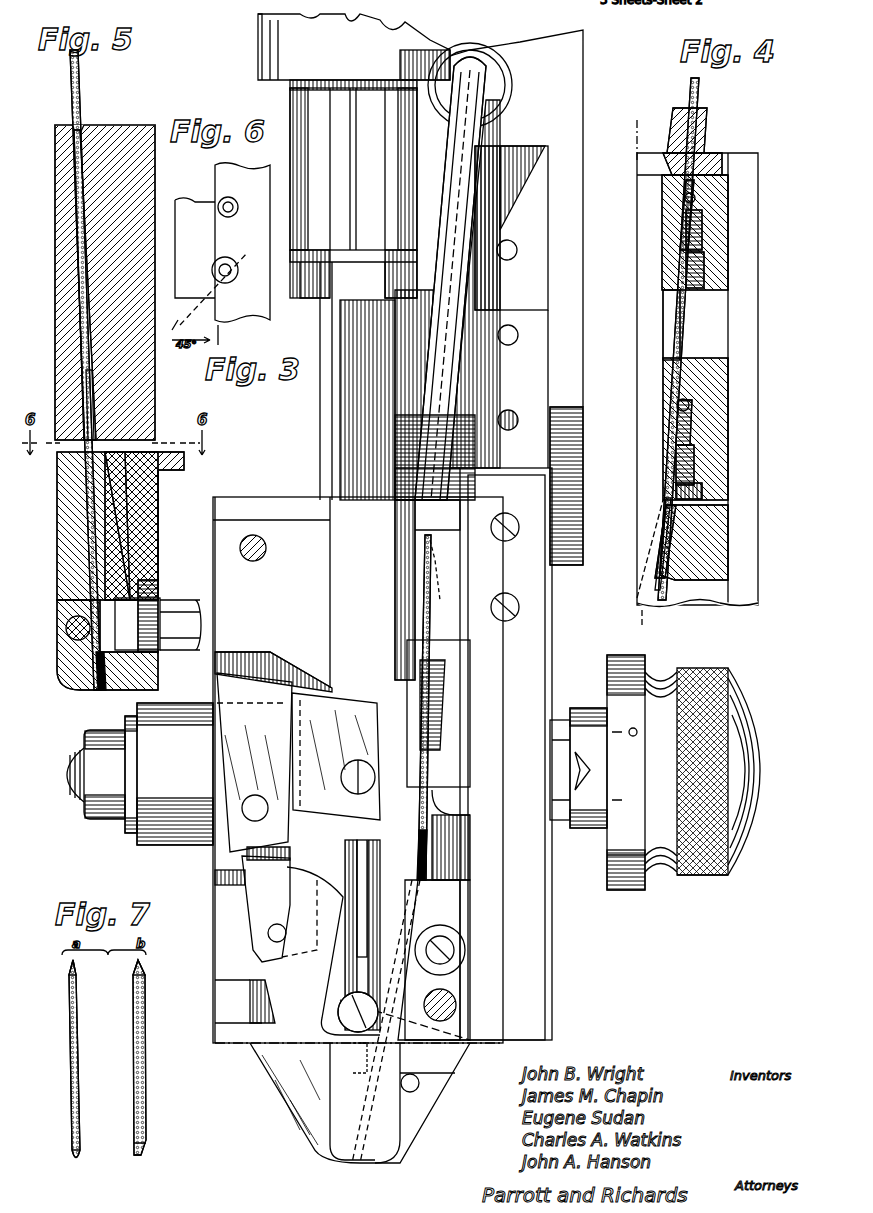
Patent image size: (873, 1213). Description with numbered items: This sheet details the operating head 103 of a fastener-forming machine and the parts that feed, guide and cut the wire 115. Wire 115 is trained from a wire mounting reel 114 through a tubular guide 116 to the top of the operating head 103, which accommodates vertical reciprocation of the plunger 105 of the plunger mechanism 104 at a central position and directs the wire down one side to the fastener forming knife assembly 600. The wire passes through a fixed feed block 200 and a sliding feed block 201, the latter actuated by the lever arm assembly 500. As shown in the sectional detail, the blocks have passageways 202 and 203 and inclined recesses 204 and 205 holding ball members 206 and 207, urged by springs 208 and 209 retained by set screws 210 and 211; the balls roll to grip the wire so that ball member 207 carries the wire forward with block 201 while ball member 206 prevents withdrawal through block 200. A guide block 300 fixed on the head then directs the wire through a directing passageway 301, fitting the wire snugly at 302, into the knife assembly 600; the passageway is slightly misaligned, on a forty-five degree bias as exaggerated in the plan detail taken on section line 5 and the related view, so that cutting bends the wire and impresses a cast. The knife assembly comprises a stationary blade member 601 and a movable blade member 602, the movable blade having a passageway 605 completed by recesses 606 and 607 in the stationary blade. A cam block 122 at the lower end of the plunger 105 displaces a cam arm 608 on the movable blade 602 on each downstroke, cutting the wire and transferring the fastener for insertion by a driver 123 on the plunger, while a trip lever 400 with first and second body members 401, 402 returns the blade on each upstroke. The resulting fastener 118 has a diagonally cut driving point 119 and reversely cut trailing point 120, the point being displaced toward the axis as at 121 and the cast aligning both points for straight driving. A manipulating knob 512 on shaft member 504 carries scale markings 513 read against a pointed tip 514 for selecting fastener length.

In FIG. 3, the section line 5— 5 is at (425, 858).
In FIG. 4, the operating head 103 is at (758, 567).
In FIG. 3, the operating head 103 is at (505, 982).
In FIG. 3, the plunger mechanism 104 is at (281, 113).
In FIG. 3, the plunger 105 is at (322, 470).
In FIG. 3, the wire mounting reel 114 is at (585, 68).
In FIG. 5, the wire 115 is at (82, 95).
In FIG. 4, the wire 115 is at (700, 93).
In FIG. 3, the wire 115 is at (428, 845).
In FIG. 4, the tubular guide 116 is at (708, 128).
In FIG. 3, the tubular guide 116 is at (510, 130).
In FIG. 7, the fastener 118 is at (69, 1050).
In FIG. 7, the driving point 119 is at (134, 1143).
In FIG. 7, the trailing point 120 is at (70, 968).
In FIG. 7, the displaced point position 121 is at (138, 1158).
In FIG. 3, the cam block 122 is at (336, 756).
In FIG. 3, the driver 123 is at (362, 958).
In FIG. 4, the fixed wire feed block 200 is at (662, 220).
In FIG. 3, the fixed wire feed block 200 is at (430, 535).
In FIG. 4, the movable wire feed block 201 is at (668, 400).
In FIG. 3, the movable wire feed block 201 is at (438, 710).
In FIG. 4, the wire passageway 202 is at (665, 295).
In FIG. 4, the wire passageway 203 is at (668, 352).
In FIG. 4, the recess 204 is at (695, 186).
In FIG. 4, the recess 205 is at (690, 395).
In FIG. 4, the ball member 206 is at (700, 203).
In FIG. 4, the ball member 207 is at (690, 412).
In FIG. 4, the spring 208 is at (702, 240).
In FIG. 4, the spring 209 is at (698, 458).
In FIG. 4, the set screw 210 is at (704, 276).
In FIG. 4, the set screw 211 is at (705, 491).
In FIG. 5, the guide block 300 is at (55, 195).
In FIG. 4, the guide block 300 is at (725, 530).
In FIG. 3, the guide block 300 is at (470, 968).
In FIG. 5, the directing passageway 301 is at (84, 238).
In FIG. 6, the directing passageway 301 is at (222, 290).
In FIG. 4, the directing passageway 301 is at (658, 526).
In FIG. 3, the directing passageway 301 is at (415, 905).
In FIG. 5, the snug fitting portion 302 is at (88, 390).
In FIG. 3, the snug fitting portion 302 is at (470, 1050).
In FIG. 3, the trip lever 400 is at (217, 856).
In FIG. 3, the first body member 401 is at (232, 688).
In FIG. 3, the second body member 402 is at (255, 905).
In FIG. 3, the lever arm assembly 500 is at (764, 771).
In FIG. 3, the shaft member 504 is at (555, 740).
In FIG. 3, the manipulating knob 512 is at (700, 876).
In FIG. 3, the scale markings 513 is at (628, 885).
In FIG. 3, the pointed tip 514 is at (600, 780).
In FIG. 5, the fastener forming knife assembly 600 is at (68, 678).
In FIG. 3, the fastener forming knife assembly 600 is at (283, 1111).
In FIG. 5, the stationary blade member 601 is at (158, 510).
In FIG. 6, the stationary blade member 601 is at (250, 175).
In FIG. 3, the stationary blade member 601 is at (410, 1145).
In FIG. 5, the movable blade member 602 is at (57, 503).
In FIG. 6, the movable blade member 602 is at (193, 202).
In FIG. 3, the movable blade member 602 is at (332, 1160).
In FIG. 5, the passageway 605 is at (100, 690).
In FIG. 5, the recess 606 is at (120, 460).
In FIG. 6, the recess 606 is at (260, 232).
In FIG. 6, the recess 607 is at (236, 200).
In FIG. 3, the cam arm 608 is at (293, 968).